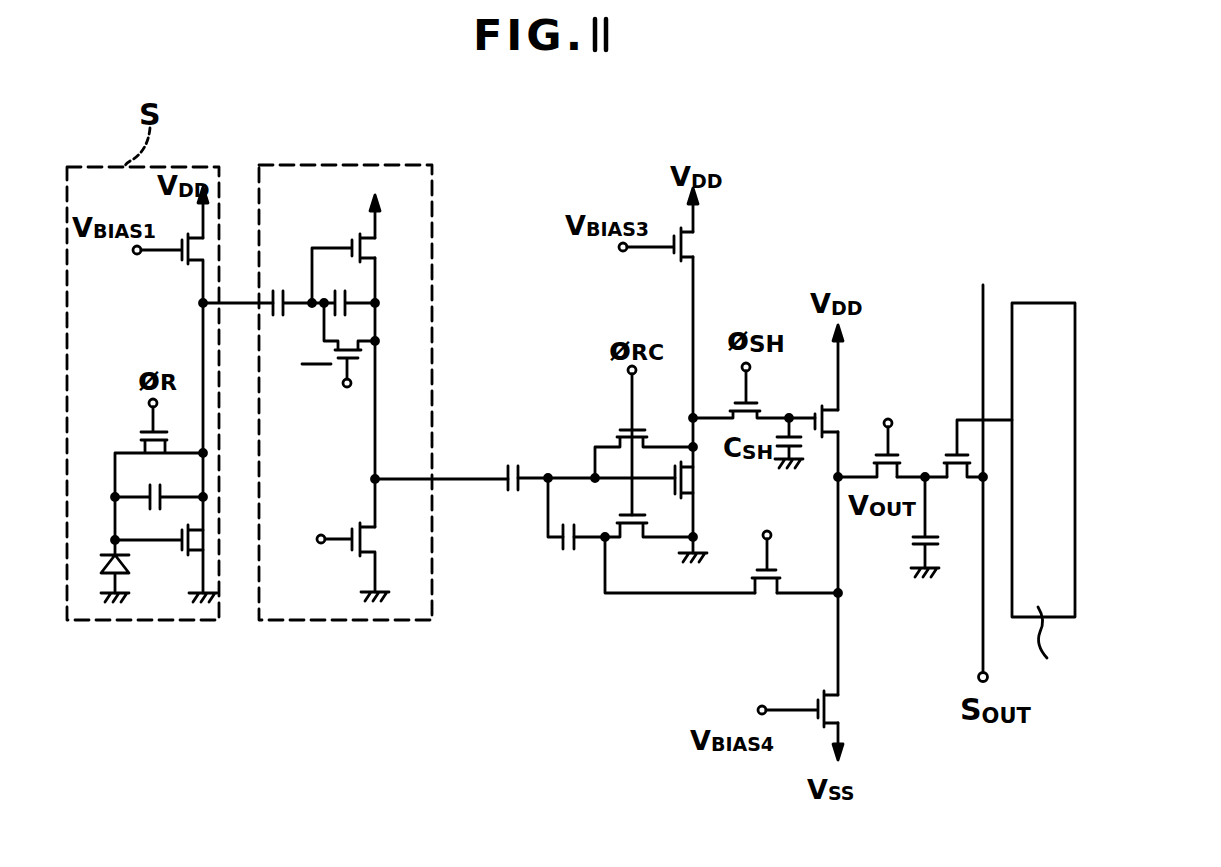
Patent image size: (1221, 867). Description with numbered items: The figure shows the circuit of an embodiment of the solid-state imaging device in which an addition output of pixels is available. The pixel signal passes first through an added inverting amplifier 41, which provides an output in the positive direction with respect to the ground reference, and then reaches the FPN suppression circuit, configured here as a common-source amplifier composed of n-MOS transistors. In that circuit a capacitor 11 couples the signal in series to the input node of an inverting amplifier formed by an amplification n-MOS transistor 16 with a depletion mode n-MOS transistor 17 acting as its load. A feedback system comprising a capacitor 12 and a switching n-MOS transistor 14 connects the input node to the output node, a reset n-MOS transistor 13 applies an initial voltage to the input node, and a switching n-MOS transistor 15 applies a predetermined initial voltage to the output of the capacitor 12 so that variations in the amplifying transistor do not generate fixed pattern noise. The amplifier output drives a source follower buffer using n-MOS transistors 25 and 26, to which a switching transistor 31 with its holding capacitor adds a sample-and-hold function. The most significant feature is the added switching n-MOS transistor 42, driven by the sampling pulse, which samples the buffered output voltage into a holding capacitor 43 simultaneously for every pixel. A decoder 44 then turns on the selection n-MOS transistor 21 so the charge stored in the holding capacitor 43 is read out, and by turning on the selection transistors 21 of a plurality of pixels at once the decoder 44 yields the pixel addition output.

The capacitor 11 is at (499, 488).
The capacitor 12 is at (548, 538).
The reset n-MOS transistor 13 is at (606, 434).
The switching n-MOS transistor 14 is at (767, 598).
The switching n-MOS transistor 15 is at (634, 537).
The amplification n-MOS transistor 16 is at (701, 479).
The depletion mode n-MOS transistor 17 is at (697, 247).
The selection n-MOS transistor 21 is at (960, 482).
The n-MOS transistor 25 is at (855, 715).
The n-MOS transistor 26 is at (845, 417).
The switching transistor 31 is at (763, 397).
The inverting amplifier 41 is at (333, 622).
The switching n-MOS transistor 42 is at (905, 460).
The holding capacitor 43 is at (947, 540).
The decoder 44 is at (1026, 303).